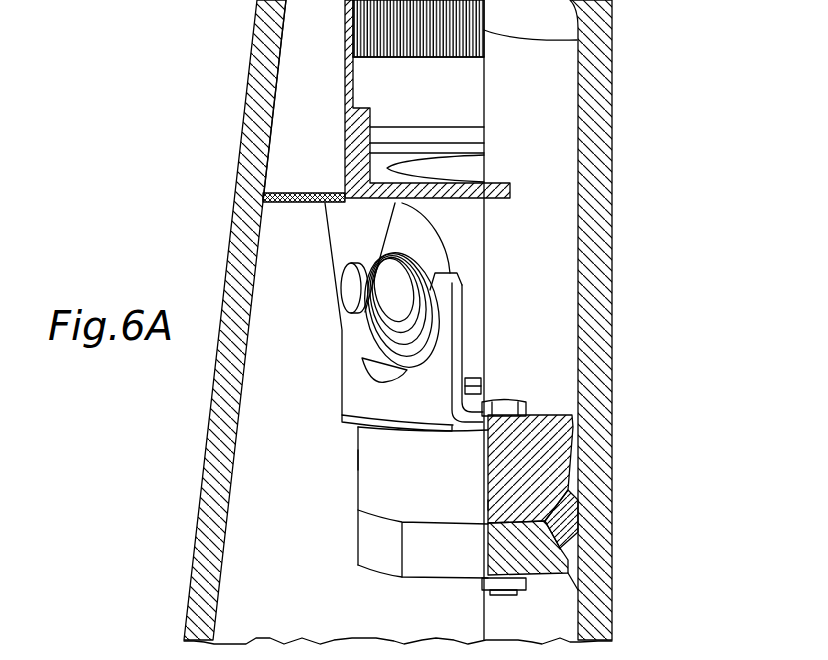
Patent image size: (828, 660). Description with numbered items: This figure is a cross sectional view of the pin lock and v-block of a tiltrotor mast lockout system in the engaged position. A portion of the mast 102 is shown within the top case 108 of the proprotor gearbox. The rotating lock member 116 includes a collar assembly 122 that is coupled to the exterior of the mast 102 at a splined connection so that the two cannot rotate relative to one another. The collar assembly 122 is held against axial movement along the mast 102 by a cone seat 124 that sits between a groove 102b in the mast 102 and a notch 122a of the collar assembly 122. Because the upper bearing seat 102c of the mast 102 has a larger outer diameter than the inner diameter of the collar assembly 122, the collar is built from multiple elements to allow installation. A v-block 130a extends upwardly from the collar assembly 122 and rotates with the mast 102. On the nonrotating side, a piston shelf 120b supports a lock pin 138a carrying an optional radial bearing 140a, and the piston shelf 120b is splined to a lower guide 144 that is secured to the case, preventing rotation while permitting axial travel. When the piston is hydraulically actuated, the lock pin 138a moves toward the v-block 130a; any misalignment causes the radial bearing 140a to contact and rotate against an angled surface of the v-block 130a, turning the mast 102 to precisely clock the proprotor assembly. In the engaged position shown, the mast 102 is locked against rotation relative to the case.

The mast 102 is at (600, 140).
The groove 102b is at (578, 450).
The upper bearing seat 102c is at (578, 508).
The top case 108 is at (215, 472).
The rotating lock member 116 is at (344, 460).
The piston shelf 120b is at (437, 94).
The collar assembly 122 is at (355, 485).
The notch 122a is at (547, 503).
The cone seat 124 is at (578, 546).
The v-block 130a is at (355, 390).
The lock pin 138a is at (347, 288).
The radial bearing 140a is at (362, 324).
The lower guide 144 is at (290, 82).